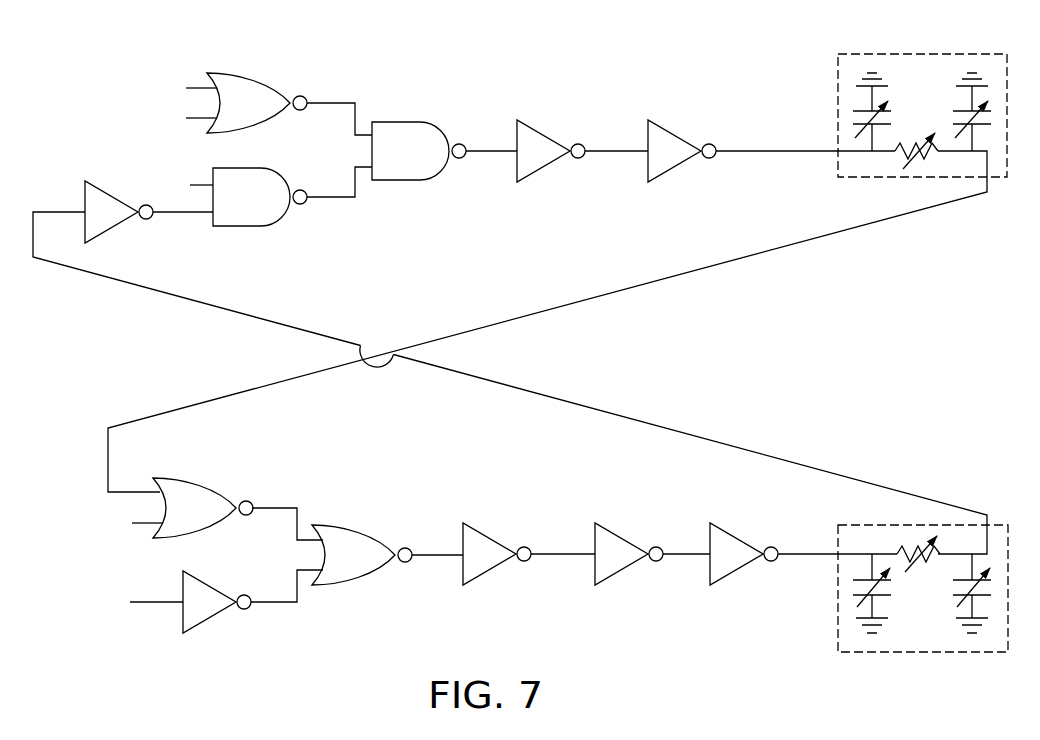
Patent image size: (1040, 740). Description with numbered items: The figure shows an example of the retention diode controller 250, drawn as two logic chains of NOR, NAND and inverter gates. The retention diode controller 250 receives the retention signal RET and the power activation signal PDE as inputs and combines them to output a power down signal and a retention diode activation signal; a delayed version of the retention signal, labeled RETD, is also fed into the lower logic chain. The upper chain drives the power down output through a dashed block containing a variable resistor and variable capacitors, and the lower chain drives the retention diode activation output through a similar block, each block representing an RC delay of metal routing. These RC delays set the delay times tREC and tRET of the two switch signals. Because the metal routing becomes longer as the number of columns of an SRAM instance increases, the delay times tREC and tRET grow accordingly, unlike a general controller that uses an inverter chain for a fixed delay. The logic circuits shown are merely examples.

The retention diode controller 250 is at (557, 32).
The power activation signal PDE is at (147, 307).
The retention signal RET is at (177, 120).
The retention delayed signal RETD is at (122, 604).
The recovery delay time tREC is at (922, 117).
The retention delay time tRET is at (922, 589).